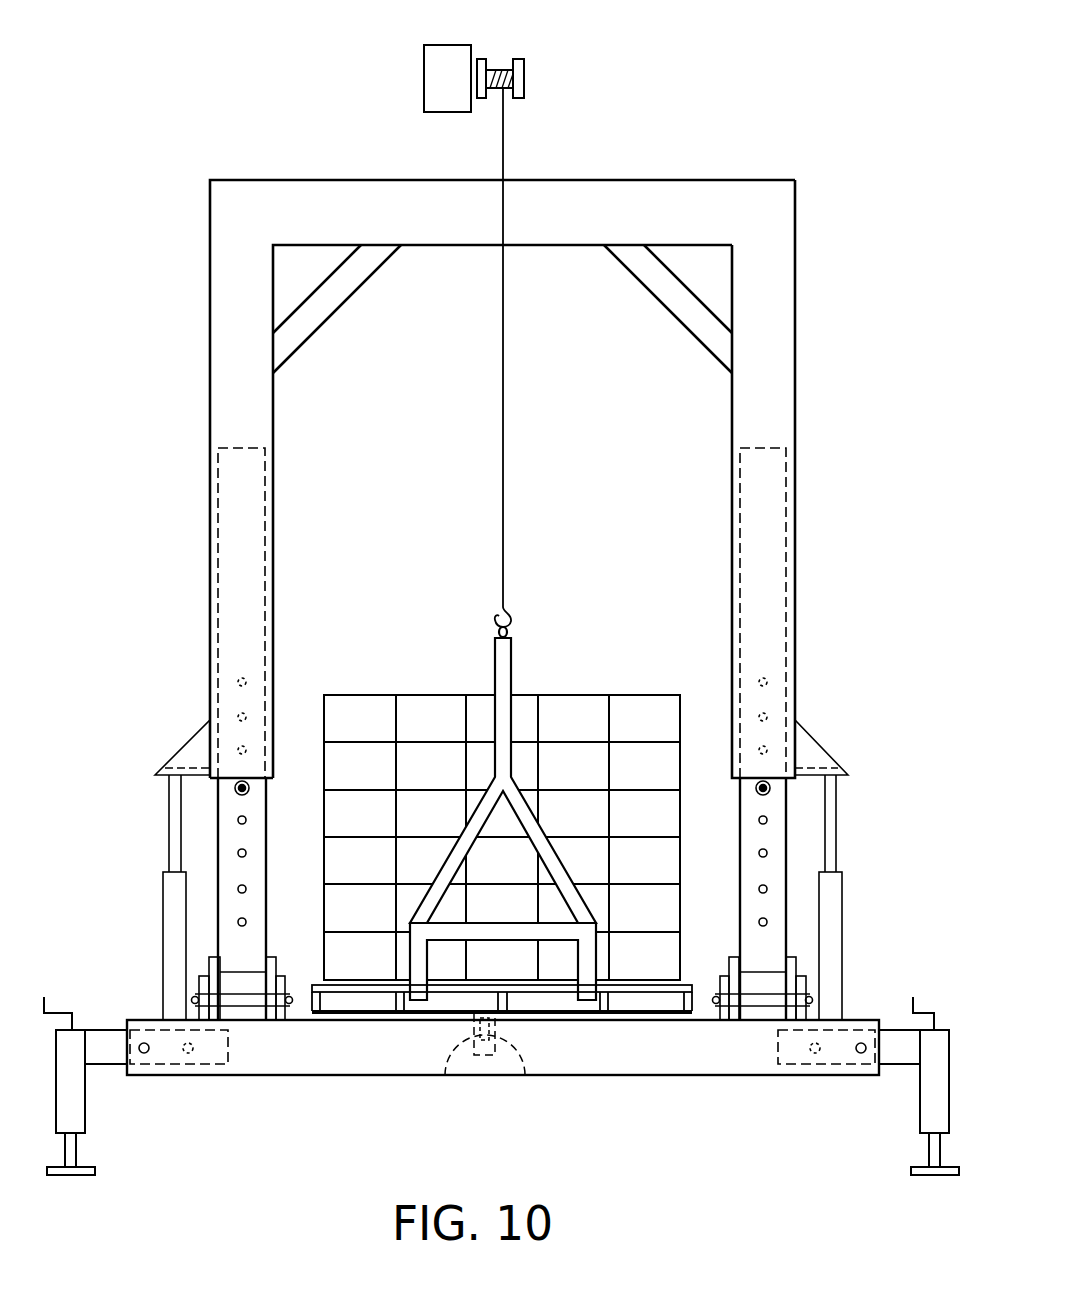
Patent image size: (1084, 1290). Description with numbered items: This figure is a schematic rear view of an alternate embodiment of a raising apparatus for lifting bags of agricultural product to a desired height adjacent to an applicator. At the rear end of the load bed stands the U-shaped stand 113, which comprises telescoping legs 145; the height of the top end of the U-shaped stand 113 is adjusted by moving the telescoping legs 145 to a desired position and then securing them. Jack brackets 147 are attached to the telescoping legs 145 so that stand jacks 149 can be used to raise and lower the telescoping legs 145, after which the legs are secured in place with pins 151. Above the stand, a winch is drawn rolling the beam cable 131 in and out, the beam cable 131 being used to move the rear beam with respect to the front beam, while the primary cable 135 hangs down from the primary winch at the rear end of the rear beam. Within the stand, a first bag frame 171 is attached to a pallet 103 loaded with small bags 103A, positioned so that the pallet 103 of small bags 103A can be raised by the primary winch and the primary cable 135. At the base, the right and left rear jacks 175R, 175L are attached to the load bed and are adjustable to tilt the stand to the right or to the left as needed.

The U-shaped stand 113 is at (316, 180).
The beam cable 131 is at (447, 45).
The primary cable 135 is at (505, 515).
The telescoping legs 145 is at (797, 415).
The jack brackets 147 is at (818, 745).
The stand jacks 149 is at (845, 920).
The pins 151 is at (768, 797).
The first bag frame 171 is at (512, 657).
The small bags 103A is at (600, 695).
The pallet 103 is at (688, 1000).
The left rear jack 175L is at (85, 1105).
The right rear jack 175R is at (920, 1102).